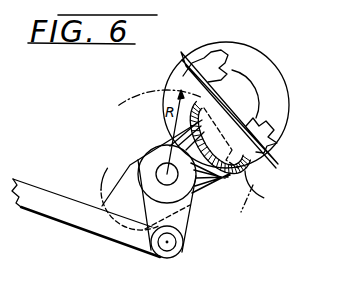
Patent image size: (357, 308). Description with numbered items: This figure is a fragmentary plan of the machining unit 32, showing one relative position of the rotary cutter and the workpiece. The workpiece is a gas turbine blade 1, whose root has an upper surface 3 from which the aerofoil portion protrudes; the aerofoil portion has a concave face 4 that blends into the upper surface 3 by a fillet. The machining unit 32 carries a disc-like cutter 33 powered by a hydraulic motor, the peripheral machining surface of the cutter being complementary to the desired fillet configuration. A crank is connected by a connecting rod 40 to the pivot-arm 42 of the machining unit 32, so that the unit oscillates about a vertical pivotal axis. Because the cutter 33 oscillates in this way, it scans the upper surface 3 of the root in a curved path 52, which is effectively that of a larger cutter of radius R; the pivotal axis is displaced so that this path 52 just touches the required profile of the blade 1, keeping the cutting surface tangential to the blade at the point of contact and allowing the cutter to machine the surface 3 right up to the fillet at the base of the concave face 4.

The blade 1 is at (211, 53).
The upper surface 3 is at (228, 88).
The concave face 4 is at (227, 110).
The machining unit 32 is at (117, 185).
The disc-like cutter 33 is at (253, 197).
The connecting rod 40 is at (118, 238).
The pivot-arm 42 is at (186, 212).
The curved path 52 is at (143, 91).